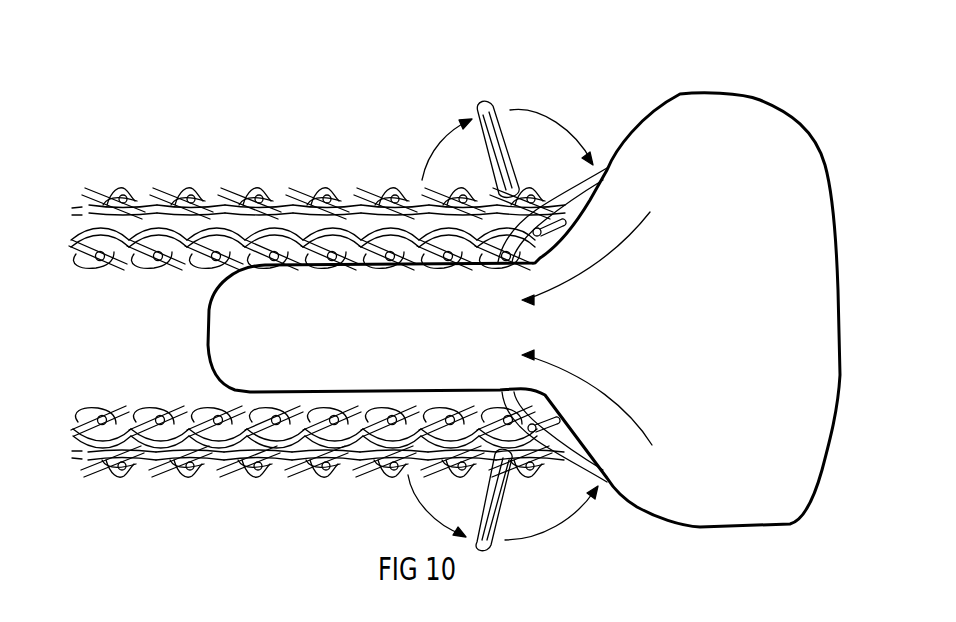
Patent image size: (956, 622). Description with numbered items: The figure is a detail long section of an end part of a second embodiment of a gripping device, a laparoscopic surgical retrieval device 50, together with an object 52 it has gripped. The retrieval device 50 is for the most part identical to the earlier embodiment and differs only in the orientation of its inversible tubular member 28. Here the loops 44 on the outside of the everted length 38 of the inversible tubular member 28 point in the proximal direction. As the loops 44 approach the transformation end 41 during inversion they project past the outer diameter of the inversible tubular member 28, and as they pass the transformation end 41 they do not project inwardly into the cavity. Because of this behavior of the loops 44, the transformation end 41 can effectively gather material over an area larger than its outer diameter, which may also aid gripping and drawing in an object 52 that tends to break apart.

The inversible tubular member 28 is at (317, 195).
The everted length 38 is at (294, 198).
The transformation end 41 is at (605, 130).
The loops 44 is at (474, 100).
The retrieval device 50 is at (236, 476).
The object 52 is at (714, 490).